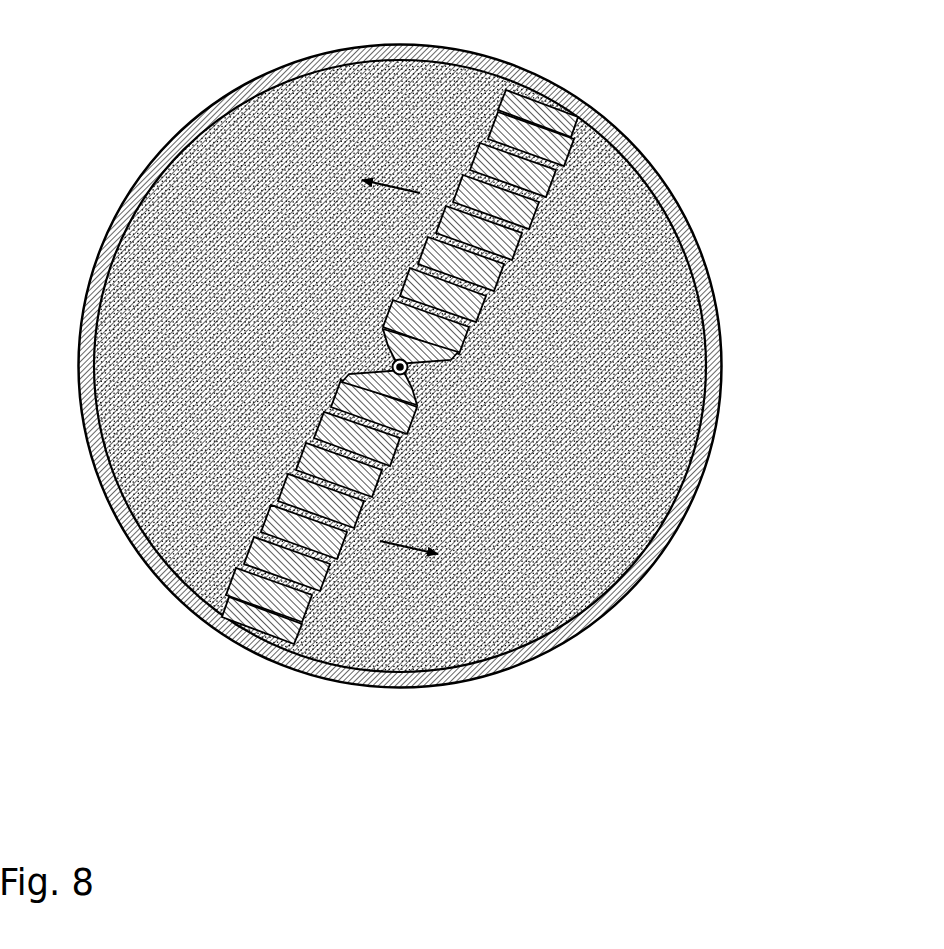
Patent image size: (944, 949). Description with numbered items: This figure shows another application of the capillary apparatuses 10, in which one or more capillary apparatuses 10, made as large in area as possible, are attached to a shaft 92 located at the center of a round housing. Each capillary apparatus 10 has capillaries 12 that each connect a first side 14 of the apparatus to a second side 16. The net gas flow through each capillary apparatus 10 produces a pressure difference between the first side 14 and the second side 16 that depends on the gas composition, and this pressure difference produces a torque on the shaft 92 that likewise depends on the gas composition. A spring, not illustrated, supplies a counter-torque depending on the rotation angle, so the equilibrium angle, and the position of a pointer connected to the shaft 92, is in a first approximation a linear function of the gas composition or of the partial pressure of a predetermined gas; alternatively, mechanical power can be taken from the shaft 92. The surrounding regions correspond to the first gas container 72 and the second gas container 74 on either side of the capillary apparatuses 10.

The capillary apparatus 10 is at (557, 112).
The capillary 12 is at (528, 160).
The first side 14 is at (493, 127).
The second side 16 is at (567, 160).
The first gas container 72 is at (175, 277).
The second gas container 74 is at (622, 452).
The shaft 92 is at (410, 371).